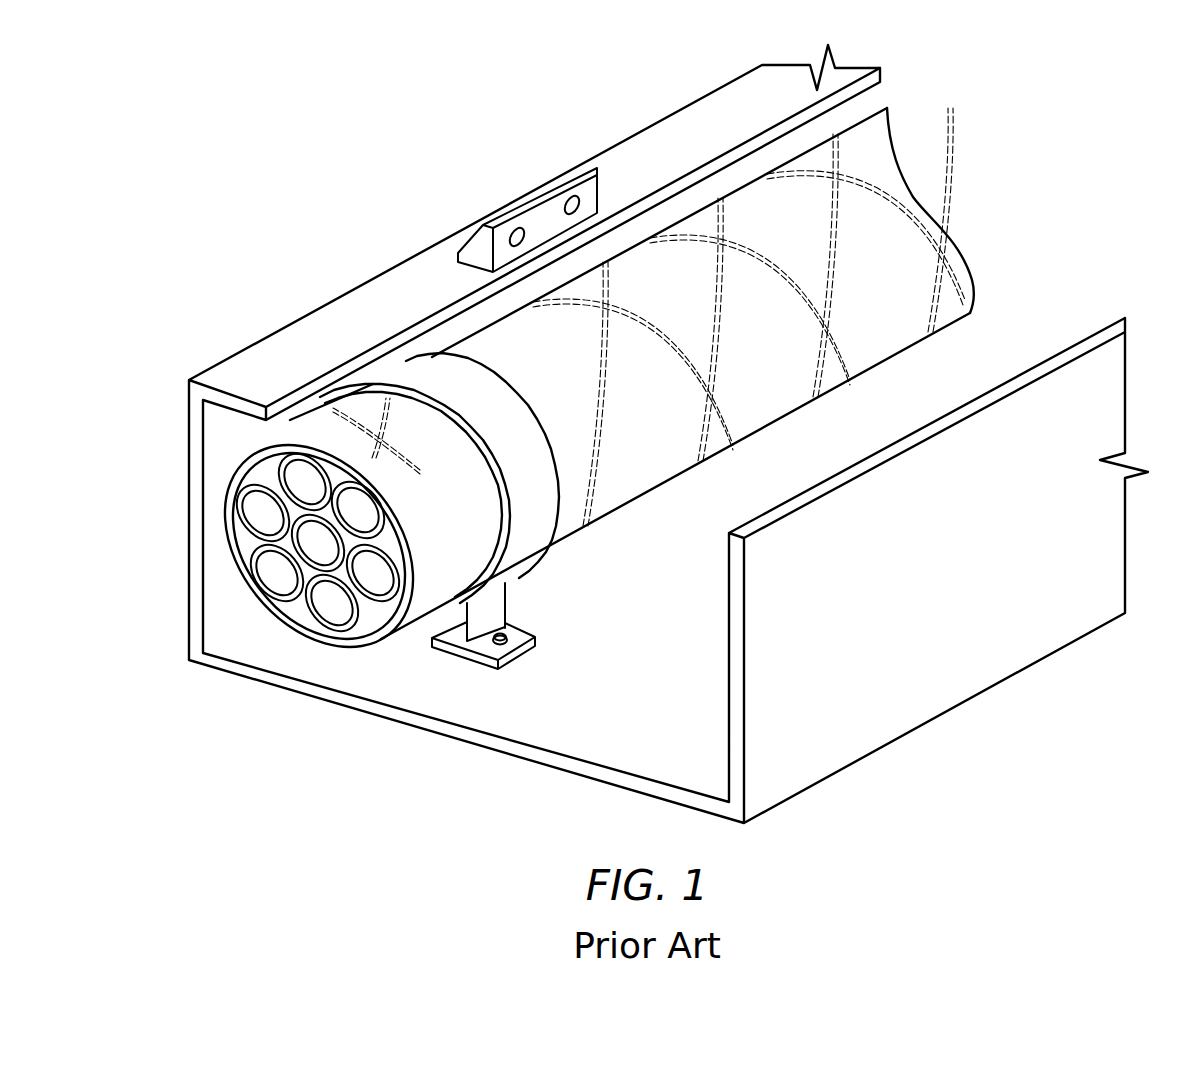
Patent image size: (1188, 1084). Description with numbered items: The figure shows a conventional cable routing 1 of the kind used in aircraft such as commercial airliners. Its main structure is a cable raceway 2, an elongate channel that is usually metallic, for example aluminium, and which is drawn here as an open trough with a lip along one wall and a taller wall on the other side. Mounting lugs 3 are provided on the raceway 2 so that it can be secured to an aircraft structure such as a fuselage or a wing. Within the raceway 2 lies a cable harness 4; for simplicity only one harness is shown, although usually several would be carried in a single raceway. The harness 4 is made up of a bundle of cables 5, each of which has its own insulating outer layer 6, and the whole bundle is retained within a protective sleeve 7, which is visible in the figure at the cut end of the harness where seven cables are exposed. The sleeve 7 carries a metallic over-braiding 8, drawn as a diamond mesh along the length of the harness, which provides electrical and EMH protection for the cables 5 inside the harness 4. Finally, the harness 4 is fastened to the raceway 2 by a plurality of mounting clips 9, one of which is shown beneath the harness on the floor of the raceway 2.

The cable routing 1 is at (332, 231).
The cable raceway 2 is at (248, 346).
The mounting lugs 3 is at (540, 212).
The cable harness 4 is at (651, 492).
The cables 5 is at (327, 610).
The insulating outer layer 6 is at (393, 601).
The protective sleeve 7 is at (233, 488).
The metallic over-braiding 8 is at (905, 201).
The mounting clips 9 is at (515, 653).